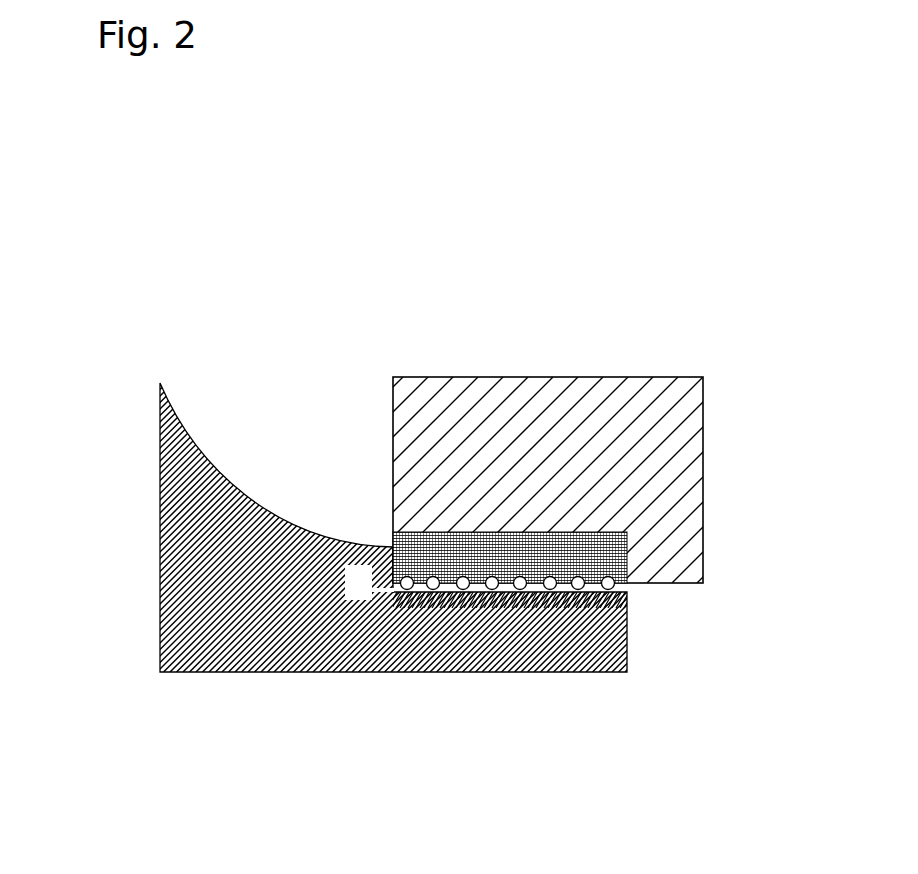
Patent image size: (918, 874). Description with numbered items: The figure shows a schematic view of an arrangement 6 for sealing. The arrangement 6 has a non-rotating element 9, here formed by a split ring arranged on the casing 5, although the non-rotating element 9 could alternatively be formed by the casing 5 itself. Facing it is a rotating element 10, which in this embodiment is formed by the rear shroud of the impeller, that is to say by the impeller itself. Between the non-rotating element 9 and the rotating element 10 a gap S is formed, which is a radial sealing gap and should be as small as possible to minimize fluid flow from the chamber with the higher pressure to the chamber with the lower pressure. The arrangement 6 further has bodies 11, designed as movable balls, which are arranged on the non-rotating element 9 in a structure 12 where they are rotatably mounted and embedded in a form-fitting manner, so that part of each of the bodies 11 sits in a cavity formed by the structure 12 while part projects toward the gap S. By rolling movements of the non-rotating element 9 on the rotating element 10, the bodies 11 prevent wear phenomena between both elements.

The casing 5 is at (393, 378).
The arrangement for sealing 6 is at (723, 357).
The non-rotating element 9 is at (620, 564).
The rotating element 10 is at (160, 413).
The bodies 11 is at (621, 591).
The structure 12 is at (616, 587).
The gap s is at (383, 572).